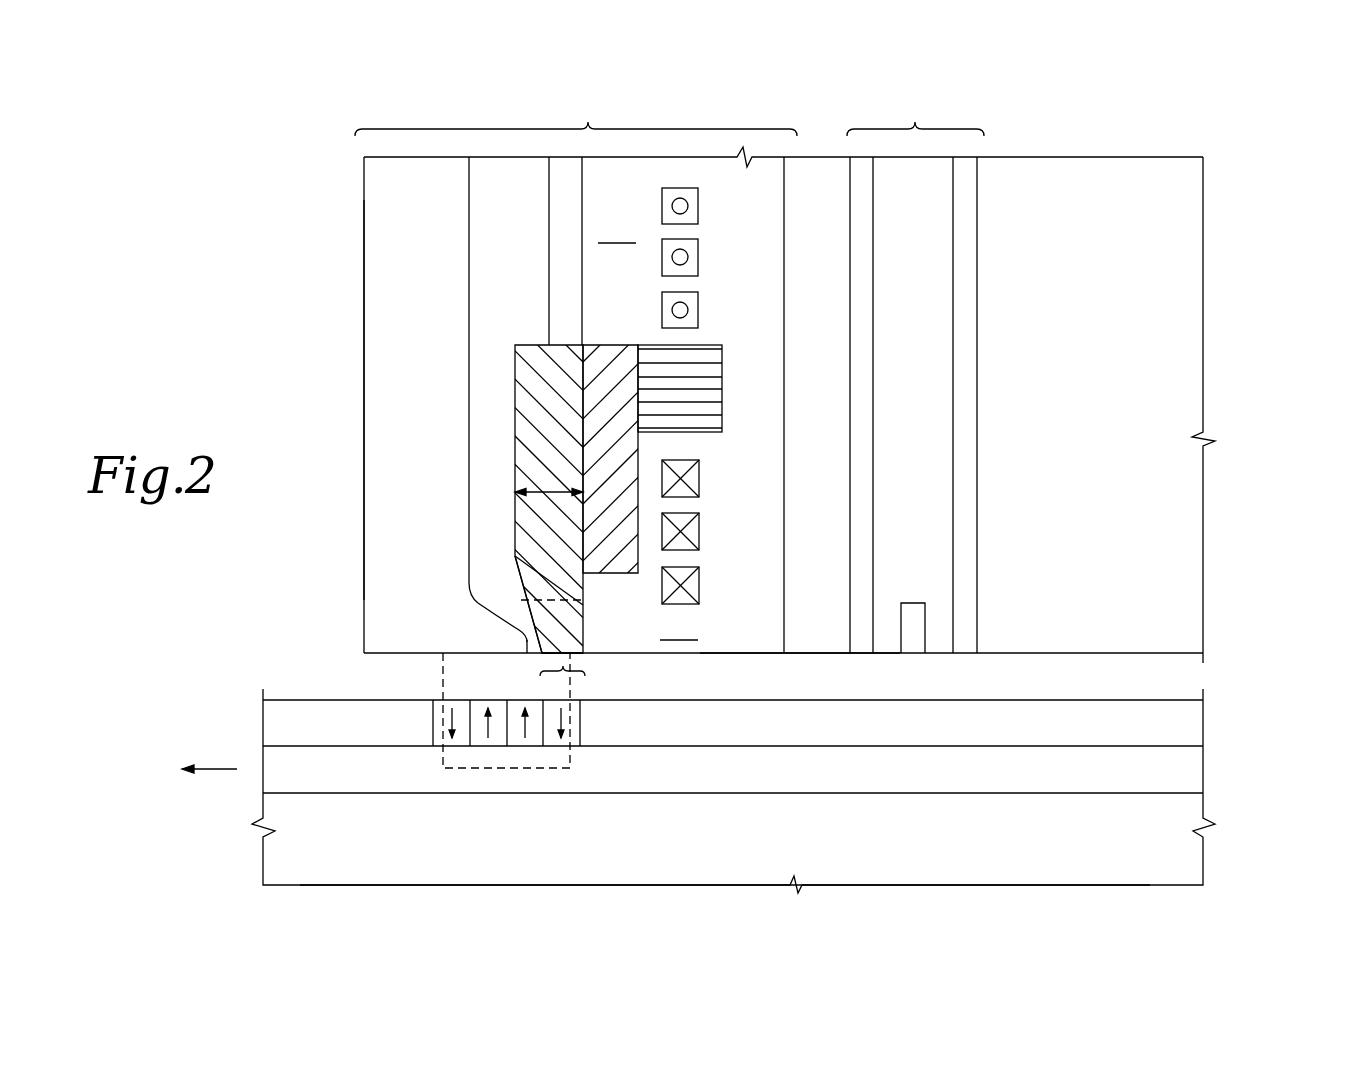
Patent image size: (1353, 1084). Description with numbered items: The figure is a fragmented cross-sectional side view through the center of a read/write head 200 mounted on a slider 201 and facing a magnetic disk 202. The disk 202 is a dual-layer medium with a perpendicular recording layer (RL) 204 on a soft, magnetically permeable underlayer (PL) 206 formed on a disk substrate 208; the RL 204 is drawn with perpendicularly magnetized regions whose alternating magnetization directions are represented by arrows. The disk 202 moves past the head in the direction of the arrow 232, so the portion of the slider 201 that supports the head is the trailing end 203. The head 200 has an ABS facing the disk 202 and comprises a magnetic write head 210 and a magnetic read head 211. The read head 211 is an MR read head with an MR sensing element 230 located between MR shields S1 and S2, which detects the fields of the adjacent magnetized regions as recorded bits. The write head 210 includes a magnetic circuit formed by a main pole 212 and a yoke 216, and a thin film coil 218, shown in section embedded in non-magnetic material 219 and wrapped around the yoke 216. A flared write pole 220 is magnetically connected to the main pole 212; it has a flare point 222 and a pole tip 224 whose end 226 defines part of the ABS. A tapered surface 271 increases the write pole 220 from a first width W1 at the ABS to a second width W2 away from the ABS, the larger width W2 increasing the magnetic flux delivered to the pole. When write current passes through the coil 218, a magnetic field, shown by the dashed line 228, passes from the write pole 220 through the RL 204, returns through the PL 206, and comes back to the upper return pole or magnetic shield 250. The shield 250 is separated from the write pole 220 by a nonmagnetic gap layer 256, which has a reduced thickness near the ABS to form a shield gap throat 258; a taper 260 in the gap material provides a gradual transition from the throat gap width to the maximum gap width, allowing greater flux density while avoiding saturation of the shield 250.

The read/write head 200 is at (223, 150).
The slider 201 is at (1193, 262).
The magnetic disk 202 is at (1227, 822).
The trailing end 203 is at (335, 382).
The recording layer 204 is at (1193, 727).
The underlayer 206 is at (1193, 770).
The disk substrate 208 is at (1193, 857).
The magnetic write head 210 is at (576, 113).
The magnetic read head 211 is at (915, 113).
The main pole 212 is at (602, 347).
The yoke 216 is at (707, 342).
The thin film coil 218 is at (710, 177).
The non-magnetic material 219 is at (650, 428).
The write pole 220 is at (530, 347).
The flare point 222 is at (515, 556).
The pole tip 224 is at (575, 617).
The end 226 is at (582, 658).
The magnetic field 228 is at (442, 677).
The MR sensing element 230 is at (908, 608).
The arrow 232 is at (220, 767).
The upper return pole 250 is at (373, 255).
The nonmagnetic gap layer 256 is at (478, 388).
The shield gap throat 258 is at (532, 635).
The taper 260 is at (469, 597).
The tapered surface 271 is at (523, 598).
The MR shield S1 is at (965, 402).
The MR shield S2 is at (863, 402).
The first width W1 is at (560, 675).
The second width W2 is at (543, 487).
The air bearing surface ABS is at (743, 653).